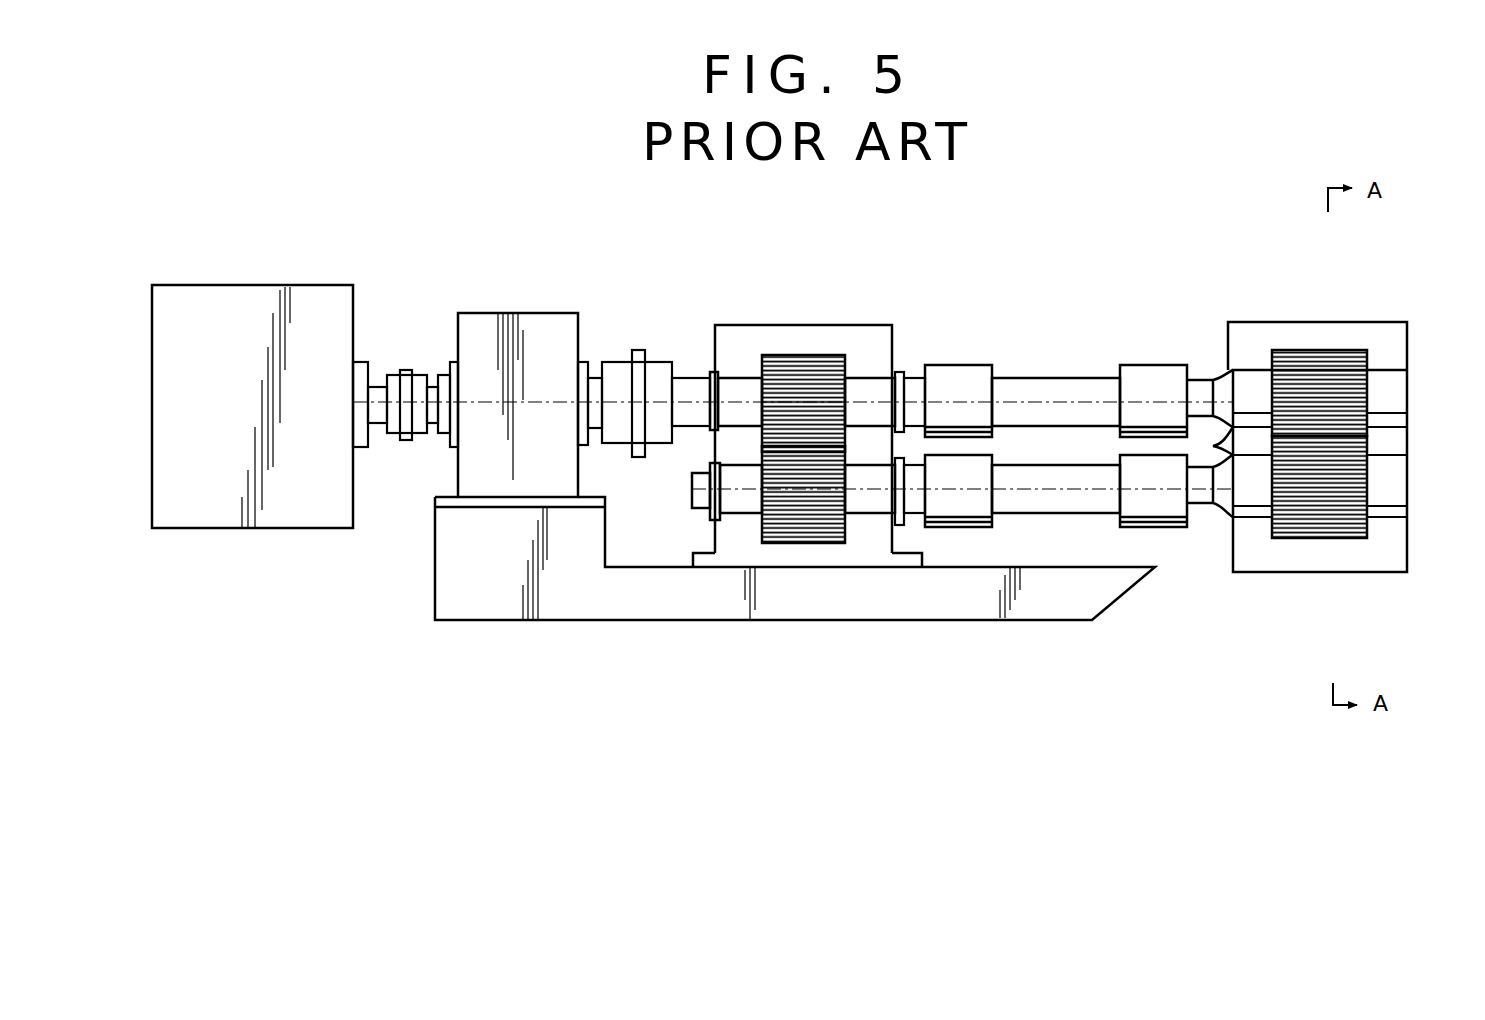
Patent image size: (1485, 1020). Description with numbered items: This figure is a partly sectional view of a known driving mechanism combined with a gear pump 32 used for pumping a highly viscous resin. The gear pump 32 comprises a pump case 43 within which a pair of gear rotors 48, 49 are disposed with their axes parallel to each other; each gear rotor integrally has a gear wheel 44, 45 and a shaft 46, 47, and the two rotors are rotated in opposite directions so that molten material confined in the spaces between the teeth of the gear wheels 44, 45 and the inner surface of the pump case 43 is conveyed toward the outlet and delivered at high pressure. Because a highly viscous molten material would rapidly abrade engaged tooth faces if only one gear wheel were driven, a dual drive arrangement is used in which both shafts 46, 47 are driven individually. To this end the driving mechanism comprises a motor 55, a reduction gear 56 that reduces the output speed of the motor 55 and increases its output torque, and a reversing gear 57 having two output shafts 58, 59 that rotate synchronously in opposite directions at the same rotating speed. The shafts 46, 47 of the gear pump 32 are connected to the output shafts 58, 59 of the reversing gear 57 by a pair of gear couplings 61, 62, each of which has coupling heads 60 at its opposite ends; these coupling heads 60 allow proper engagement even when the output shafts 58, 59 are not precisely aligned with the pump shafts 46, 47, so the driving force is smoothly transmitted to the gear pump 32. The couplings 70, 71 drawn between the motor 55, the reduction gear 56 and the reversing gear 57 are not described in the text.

The gear pump 32 is at (1329, 450).
The pump case 43 is at (1242, 322).
The gear wheel 44 is at (1288, 278).
The gear wheel 45 is at (1319, 532).
The shaft 46 is at (1248, 377).
The shaft 47 is at (1248, 512).
The gear rotor 48 is at (1329, 335).
The gear rotor 49 is at (1308, 551).
The motor 55 is at (250, 285).
The reduction gear 56 is at (540, 312).
The reversing gear 57 is at (803, 325).
The output shaft 58 is at (900, 375).
The output shaft 59 is at (913, 525).
The coupling head 60 is at (970, 365).
The gear coupling 61 is at (1055, 375).
The gear coupling 62 is at (1060, 517).
The coupling 70 is at (432, 428).
The coupling 71 is at (598, 362).